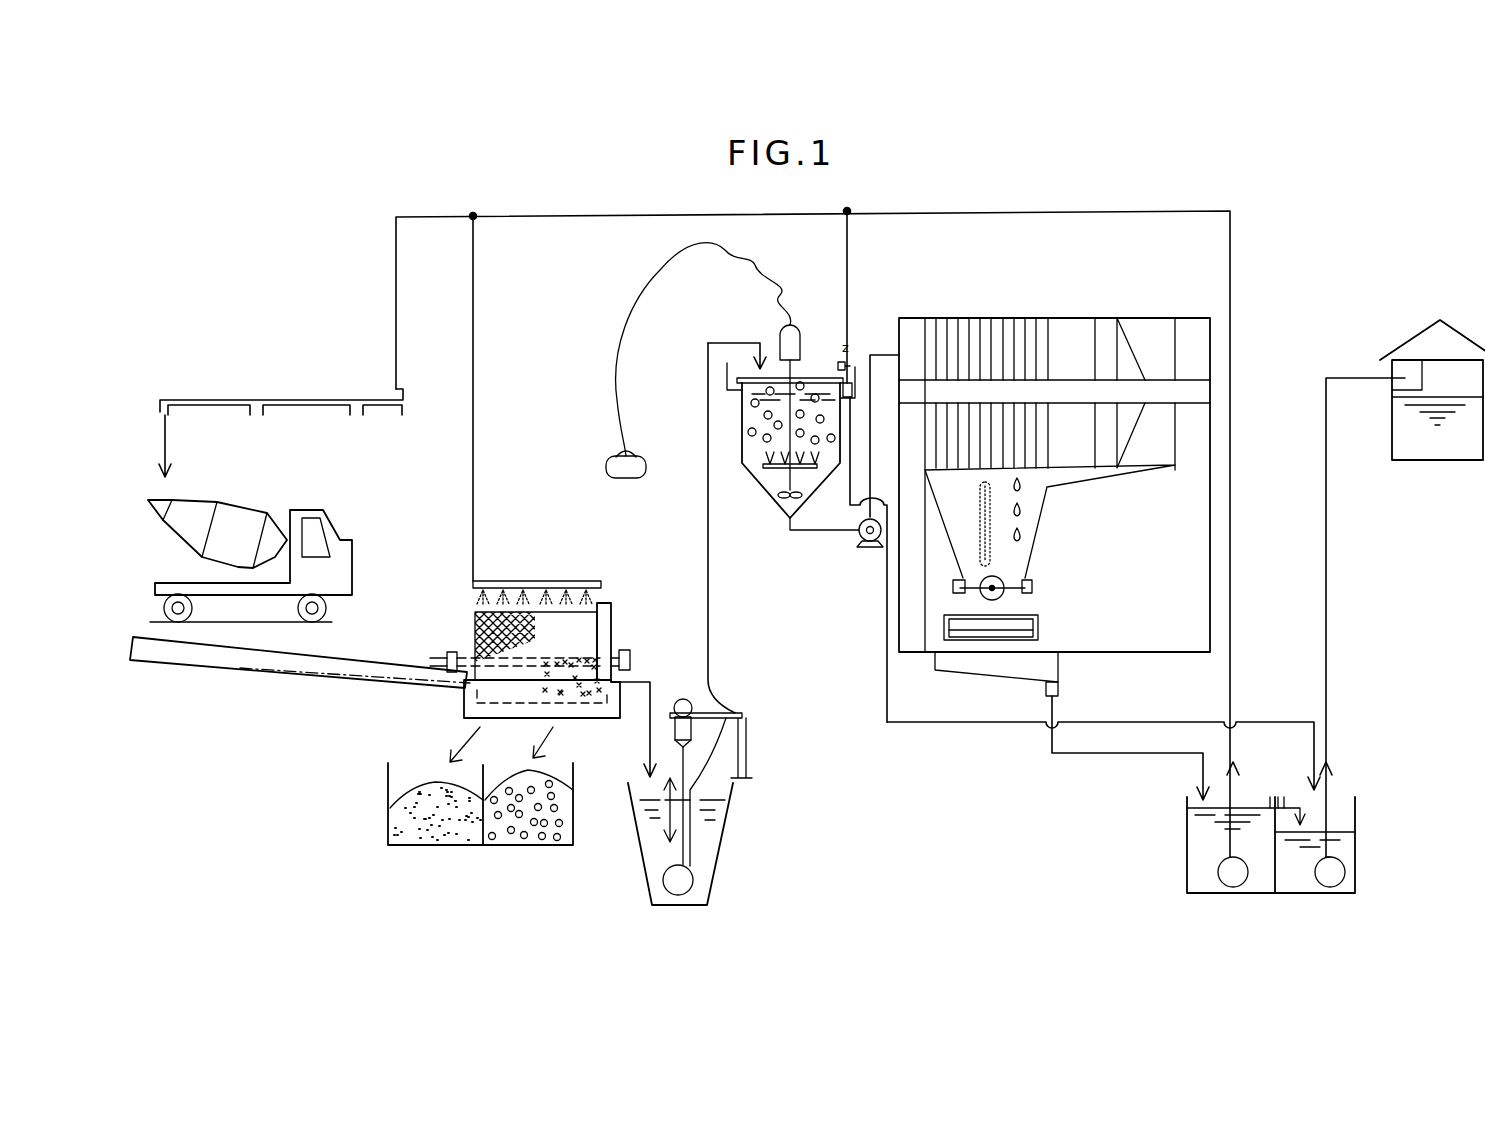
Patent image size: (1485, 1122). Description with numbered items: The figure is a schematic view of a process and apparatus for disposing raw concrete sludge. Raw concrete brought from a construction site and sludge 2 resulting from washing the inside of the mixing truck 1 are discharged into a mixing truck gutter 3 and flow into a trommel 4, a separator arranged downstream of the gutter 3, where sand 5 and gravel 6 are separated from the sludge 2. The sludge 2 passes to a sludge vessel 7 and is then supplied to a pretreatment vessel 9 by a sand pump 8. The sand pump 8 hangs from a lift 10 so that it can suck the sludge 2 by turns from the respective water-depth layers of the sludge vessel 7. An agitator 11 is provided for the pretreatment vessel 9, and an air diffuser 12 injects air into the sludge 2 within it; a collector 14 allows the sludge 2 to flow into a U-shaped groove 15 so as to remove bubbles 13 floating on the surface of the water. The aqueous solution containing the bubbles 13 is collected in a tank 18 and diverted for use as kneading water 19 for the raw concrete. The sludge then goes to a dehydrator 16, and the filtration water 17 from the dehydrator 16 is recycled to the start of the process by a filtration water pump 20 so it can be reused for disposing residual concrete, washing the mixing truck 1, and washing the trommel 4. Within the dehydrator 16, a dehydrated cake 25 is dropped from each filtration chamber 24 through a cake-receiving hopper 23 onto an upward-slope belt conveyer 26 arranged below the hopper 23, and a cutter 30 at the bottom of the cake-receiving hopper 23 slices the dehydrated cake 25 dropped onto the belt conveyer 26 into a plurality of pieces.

The mixing truck 1 is at (240, 503).
The sludge 2 is at (308, 666).
The mixing truck gutter 3 is at (187, 662).
The trommel 4 is at (612, 628).
The sand 5 is at (428, 780).
The gravel 6 is at (548, 773).
The sludge vessel 7 is at (722, 826).
The sand pump 8 is at (663, 880).
The pretreatment vessel 9 is at (752, 480).
The lift 10 is at (680, 700).
The agitator 11 is at (800, 332).
The air diffuser 12 is at (810, 470).
The bubbles 13 is at (765, 440).
The collector 14 is at (810, 380).
The U-shaped groove 15 is at (740, 380).
The dehydrator 16 is at (1068, 330).
The filtration water 17 is at (1040, 512).
The tank 18 is at (1358, 818).
The kneading water 19 is at (1441, 460).
The filtration water pump 20 is at (1218, 873).
The cake-receiving hopper 23 is at (1038, 542).
The filtration chamber 24 is at (975, 330).
The dehydrated cake 25 is at (995, 555).
The belt conveyer 26 is at (956, 618).
The cutter 30 is at (1105, 318).